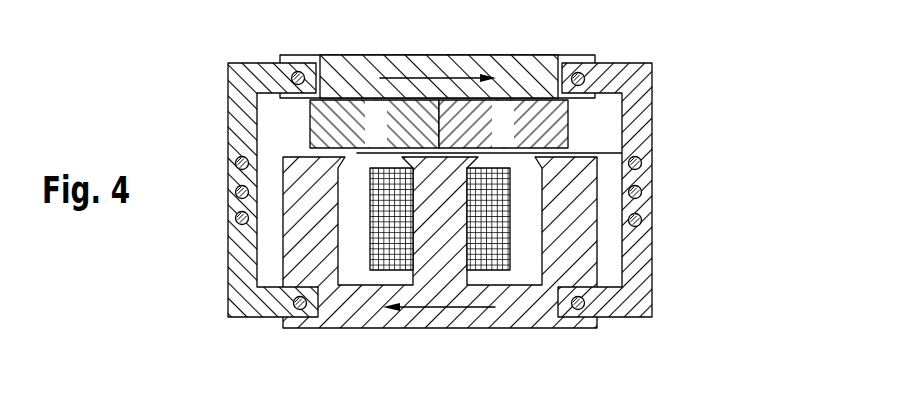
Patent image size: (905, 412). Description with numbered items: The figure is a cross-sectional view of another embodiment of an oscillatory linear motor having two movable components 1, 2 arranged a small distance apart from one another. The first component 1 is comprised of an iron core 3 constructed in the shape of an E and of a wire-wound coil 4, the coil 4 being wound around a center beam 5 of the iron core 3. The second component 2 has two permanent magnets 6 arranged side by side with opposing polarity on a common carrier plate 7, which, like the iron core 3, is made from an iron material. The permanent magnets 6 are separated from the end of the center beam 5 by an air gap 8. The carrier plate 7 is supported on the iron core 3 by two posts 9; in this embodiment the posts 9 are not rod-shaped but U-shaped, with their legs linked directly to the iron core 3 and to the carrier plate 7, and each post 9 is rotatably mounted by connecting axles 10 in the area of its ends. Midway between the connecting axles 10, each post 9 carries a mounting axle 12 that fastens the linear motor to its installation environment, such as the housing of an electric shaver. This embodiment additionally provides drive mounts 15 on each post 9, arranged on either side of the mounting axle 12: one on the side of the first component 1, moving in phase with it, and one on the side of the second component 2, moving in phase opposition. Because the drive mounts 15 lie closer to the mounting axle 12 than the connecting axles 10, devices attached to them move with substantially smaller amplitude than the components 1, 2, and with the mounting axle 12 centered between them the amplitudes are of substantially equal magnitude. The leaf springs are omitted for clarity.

The first component 1 is at (477, 200).
The second component 2 is at (495, 74).
The iron core 3 is at (498, 278).
The coil 4 is at (495, 248).
The center beam 5 is at (440, 240).
The permanent magnets 6 is at (350, 118).
The carrier plate 7 is at (545, 70).
The air gap 8 is at (622, 151).
The posts 9 is at (637, 113).
The connecting axles 10 is at (585, 79).
The mounting axle 12 is at (642, 194).
The additional drive mounts 15 is at (642, 166).